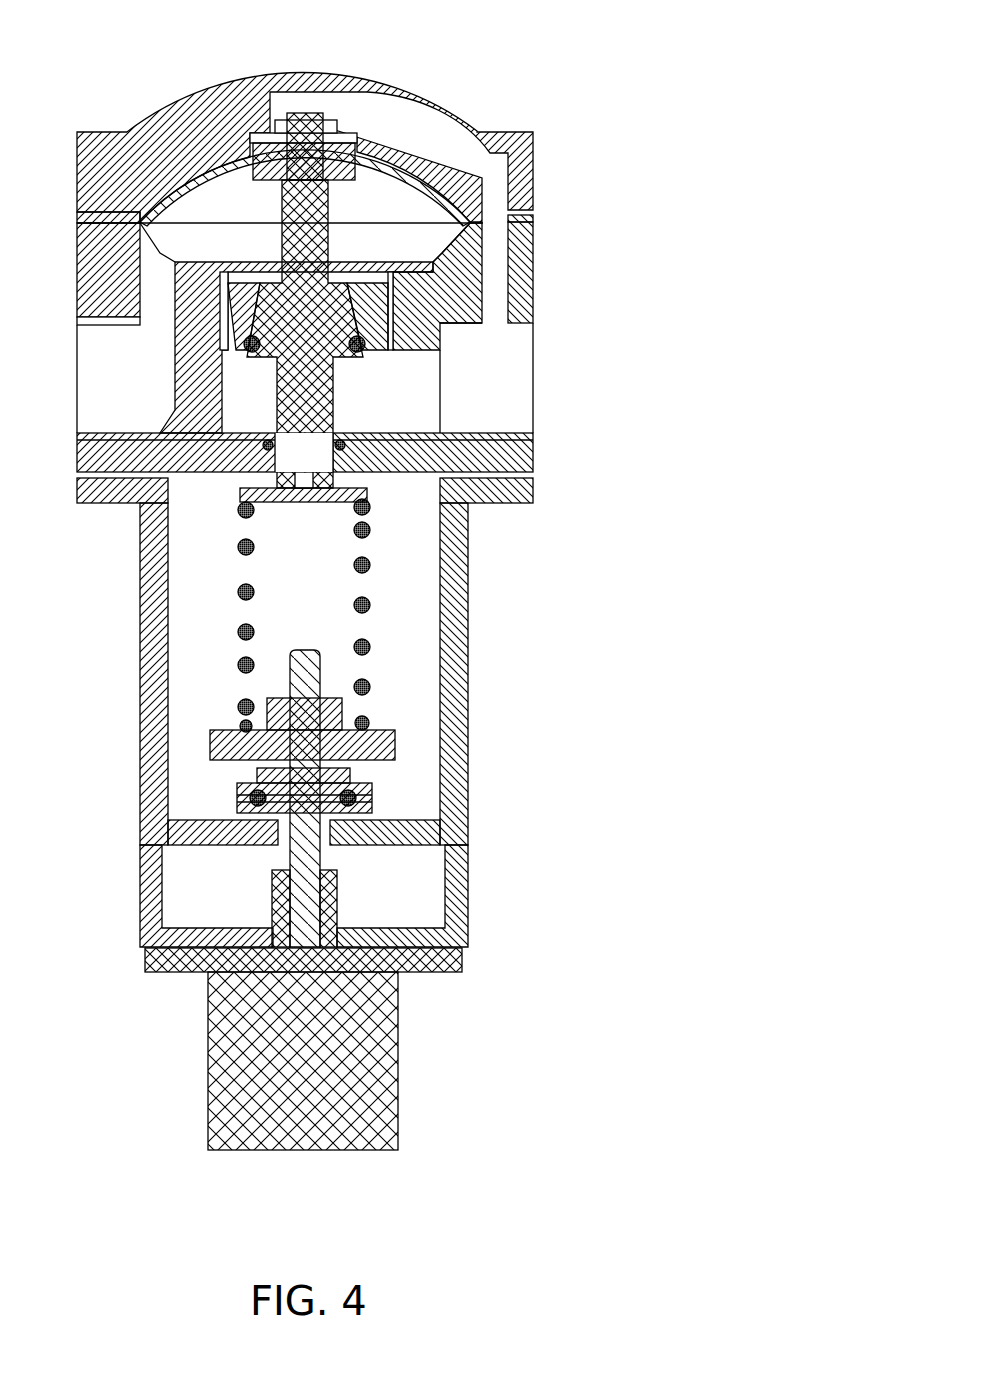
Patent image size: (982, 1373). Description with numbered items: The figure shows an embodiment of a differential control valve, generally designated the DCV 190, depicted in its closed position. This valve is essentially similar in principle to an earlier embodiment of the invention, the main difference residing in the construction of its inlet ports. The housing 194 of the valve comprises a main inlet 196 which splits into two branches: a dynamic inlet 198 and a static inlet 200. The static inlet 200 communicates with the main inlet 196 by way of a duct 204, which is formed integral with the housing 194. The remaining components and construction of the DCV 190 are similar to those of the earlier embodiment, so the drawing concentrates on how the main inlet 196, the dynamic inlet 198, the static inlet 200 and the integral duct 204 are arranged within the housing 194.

The differential control valve 190 is at (672, 127).
The housing 194 is at (533, 453).
The main inlet 196 is at (533, 362).
The dynamic inlet 198 is at (500, 403).
The static inlet 200 is at (372, 108).
The duct 204 is at (493, 270).